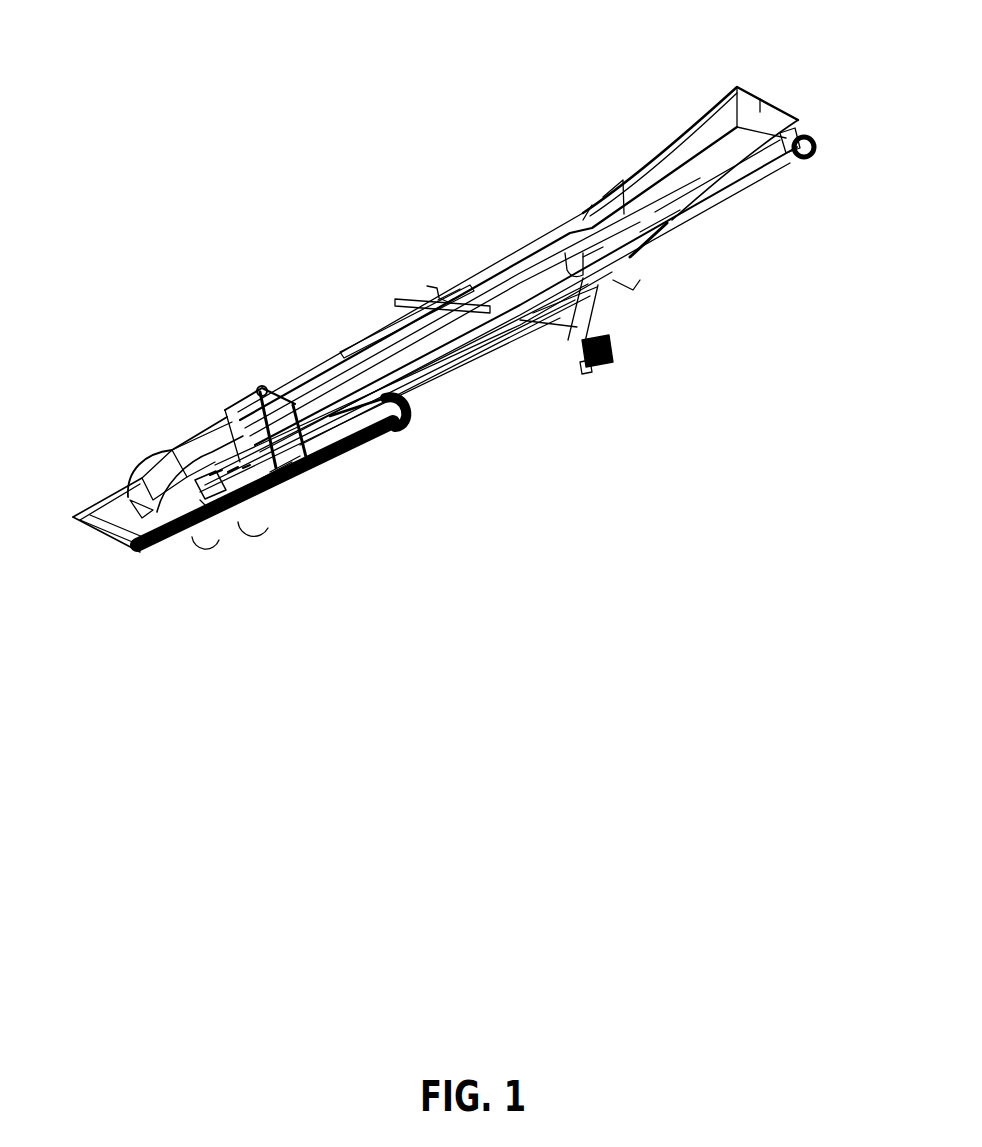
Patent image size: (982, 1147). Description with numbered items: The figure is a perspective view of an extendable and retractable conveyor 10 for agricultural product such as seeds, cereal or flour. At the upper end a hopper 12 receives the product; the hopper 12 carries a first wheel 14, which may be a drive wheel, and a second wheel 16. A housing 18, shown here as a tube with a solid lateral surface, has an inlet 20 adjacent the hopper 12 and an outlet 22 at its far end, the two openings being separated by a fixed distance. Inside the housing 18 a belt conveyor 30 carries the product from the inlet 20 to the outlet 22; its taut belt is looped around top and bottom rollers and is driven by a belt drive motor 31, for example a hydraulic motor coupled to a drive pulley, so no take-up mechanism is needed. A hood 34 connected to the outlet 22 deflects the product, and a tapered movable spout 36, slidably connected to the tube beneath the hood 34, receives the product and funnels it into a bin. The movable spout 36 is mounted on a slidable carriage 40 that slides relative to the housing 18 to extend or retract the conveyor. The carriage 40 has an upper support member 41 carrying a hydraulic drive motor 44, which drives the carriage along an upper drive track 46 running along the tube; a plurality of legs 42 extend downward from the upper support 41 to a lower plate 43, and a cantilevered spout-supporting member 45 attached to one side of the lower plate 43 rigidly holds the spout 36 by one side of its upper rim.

The extendable and retractable conveyor 10 is at (352, 316).
The hopper 12 is at (685, 150).
The first wheel 14 is at (612, 348).
The second wheel 16 is at (813, 160).
The housing 18 is at (503, 290).
The inlet 20 is at (582, 205).
The outlet 22 is at (195, 420).
The belt conveyor 30 is at (709, 178).
The belt drive motor 31 is at (220, 497).
The hood 34 is at (140, 482).
The movable spout 36 is at (189, 541).
The slidable carriage 40 is at (405, 410).
The upper support member 41 is at (237, 397).
The legs 42 is at (340, 452).
The lower plate 43 is at (290, 473).
The hydraulic drive motor 44 is at (261, 390).
The cantilevered spout-supporting member 45 is at (200, 523).
The upper drive track 46 is at (340, 358).